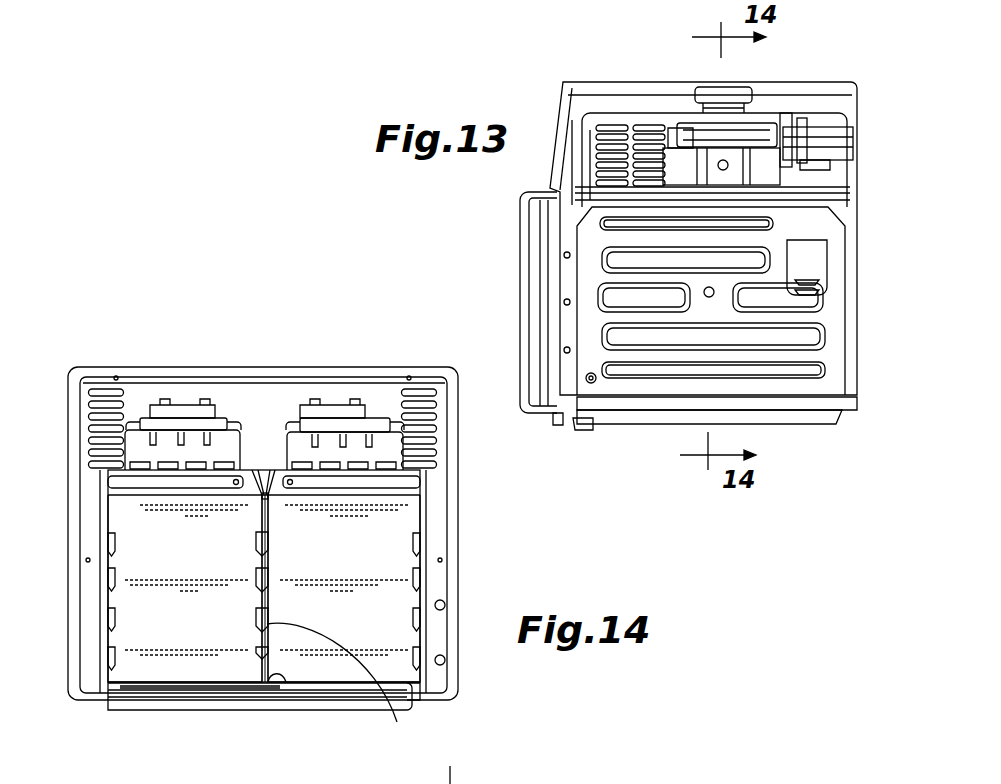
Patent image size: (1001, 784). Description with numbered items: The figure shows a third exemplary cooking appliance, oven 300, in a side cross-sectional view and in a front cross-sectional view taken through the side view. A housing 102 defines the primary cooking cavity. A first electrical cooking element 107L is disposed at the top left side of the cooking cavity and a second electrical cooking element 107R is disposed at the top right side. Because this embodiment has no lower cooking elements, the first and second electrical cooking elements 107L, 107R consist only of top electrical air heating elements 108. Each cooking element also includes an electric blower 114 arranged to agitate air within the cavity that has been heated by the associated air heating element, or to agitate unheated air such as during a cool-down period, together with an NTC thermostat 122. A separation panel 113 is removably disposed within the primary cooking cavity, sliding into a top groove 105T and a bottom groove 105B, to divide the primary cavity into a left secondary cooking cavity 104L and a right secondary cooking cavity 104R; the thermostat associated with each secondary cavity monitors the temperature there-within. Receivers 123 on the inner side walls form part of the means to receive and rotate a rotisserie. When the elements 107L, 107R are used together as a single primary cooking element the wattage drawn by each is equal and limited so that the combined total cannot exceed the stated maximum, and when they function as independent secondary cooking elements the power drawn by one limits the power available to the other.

In FIG. 13, the housing 102 is at (851, 389).
In FIG. 14, the housing 102 is at (457, 563).
In FIG. 14, the left secondary cooking cavity 104L is at (200, 572).
In FIG. 14, the right secondary cooking cavity 104R is at (372, 572).
In FIG. 14, the top groove 105T is at (270, 497).
In FIG. 14, the bottom groove 105B is at (281, 674).
In FIG. 13, the first electrical cooking element 107L is at (757, 122).
In FIG. 14, the first electrical cooking element 107L is at (232, 430).
In FIG. 14, the second electrical cooking element 107R is at (392, 432).
In FIG. 14, the top electrical air heating element 108 is at (372, 466).
In FIG. 14, the separation panel 113 is at (339, 686).
In FIG. 13, the electric blower 114 is at (717, 86).
In FIG. 14, the electric blower 114 is at (196, 405).
In FIG. 13, the NTC thermostat 122 is at (729, 166).
In FIG. 13, the receiver 123 is at (714, 293).
In FIG. 13, the third oven 300 is at (862, 168).
In FIG. 14, the third oven 300 is at (126, 715).